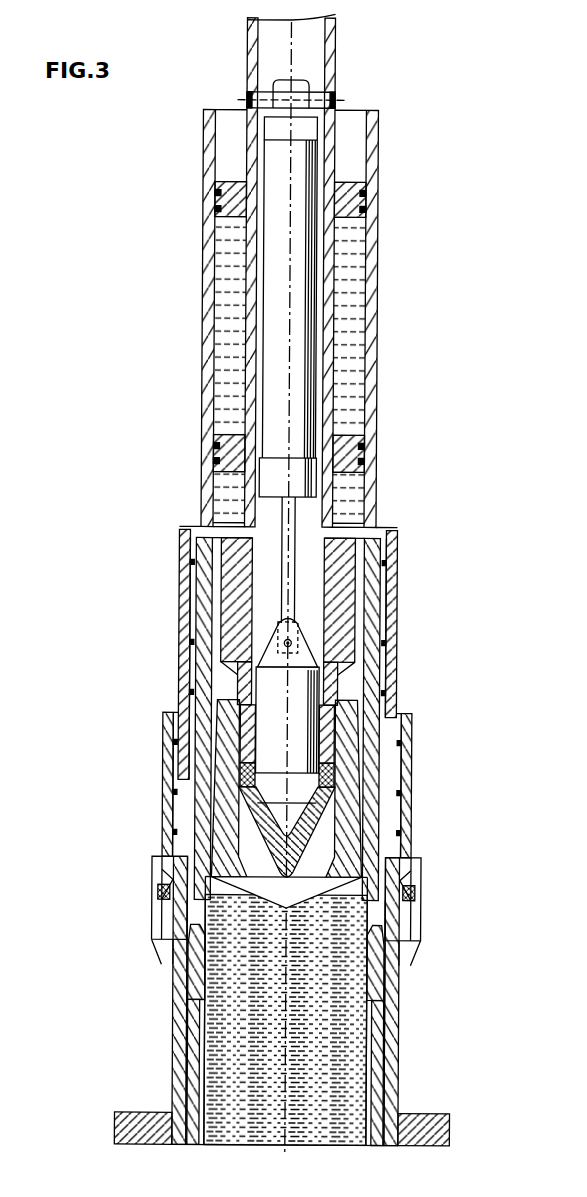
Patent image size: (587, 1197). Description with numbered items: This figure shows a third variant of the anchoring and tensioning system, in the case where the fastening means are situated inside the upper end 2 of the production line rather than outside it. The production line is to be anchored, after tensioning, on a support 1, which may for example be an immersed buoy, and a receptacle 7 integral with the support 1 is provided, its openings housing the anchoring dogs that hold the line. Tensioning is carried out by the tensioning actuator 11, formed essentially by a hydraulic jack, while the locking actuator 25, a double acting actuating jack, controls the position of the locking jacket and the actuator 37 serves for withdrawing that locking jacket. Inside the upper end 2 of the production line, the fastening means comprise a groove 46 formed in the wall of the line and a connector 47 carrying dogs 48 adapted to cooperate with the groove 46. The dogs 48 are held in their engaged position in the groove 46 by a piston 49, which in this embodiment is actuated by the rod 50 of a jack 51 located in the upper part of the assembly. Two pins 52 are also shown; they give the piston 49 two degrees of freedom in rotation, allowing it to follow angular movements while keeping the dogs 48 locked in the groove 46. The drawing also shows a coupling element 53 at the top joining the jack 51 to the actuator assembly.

The support 1 is at (130, 1111).
The upper end of the production line 2 is at (357, 826).
The receptacle 7 is at (388, 1107).
The tensioning actuator 11 is at (390, 316).
The locking actuator 25 is at (408, 652).
The actuator for withdrawing the locking jacket 37 is at (422, 764).
The groove 46 is at (246, 712).
The connector 47 is at (317, 642).
The dogs 48 is at (251, 740).
The piston 49 is at (296, 745).
The rod 50 is at (296, 522).
The jack 51 is at (308, 275).
The pins 52 is at (286, 642).
The coupling pin 53 is at (330, 97).